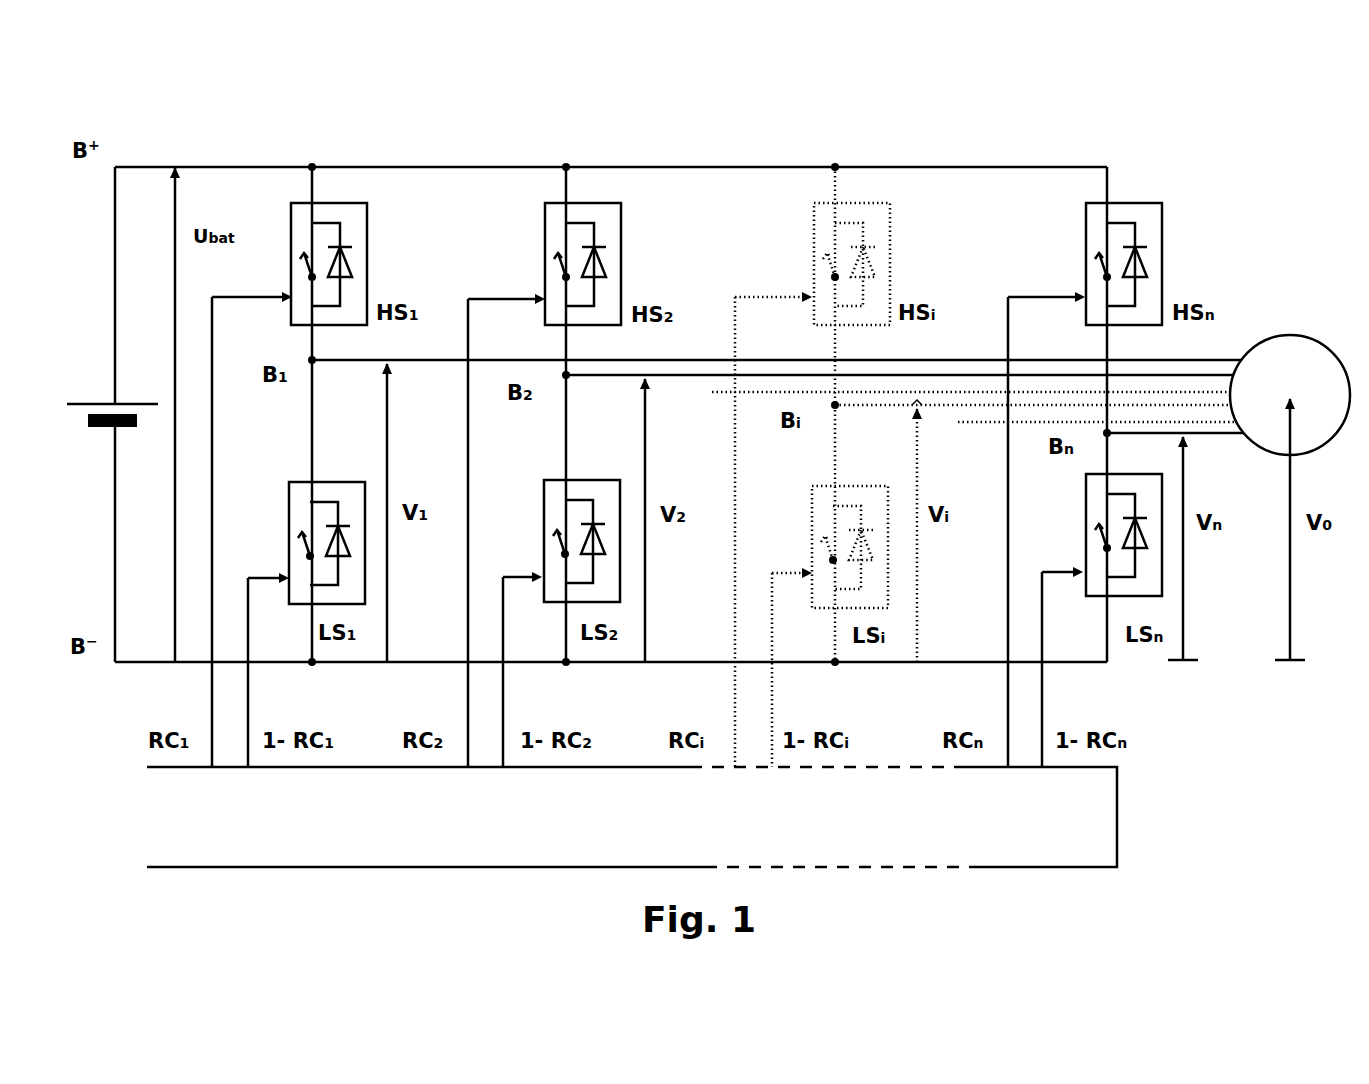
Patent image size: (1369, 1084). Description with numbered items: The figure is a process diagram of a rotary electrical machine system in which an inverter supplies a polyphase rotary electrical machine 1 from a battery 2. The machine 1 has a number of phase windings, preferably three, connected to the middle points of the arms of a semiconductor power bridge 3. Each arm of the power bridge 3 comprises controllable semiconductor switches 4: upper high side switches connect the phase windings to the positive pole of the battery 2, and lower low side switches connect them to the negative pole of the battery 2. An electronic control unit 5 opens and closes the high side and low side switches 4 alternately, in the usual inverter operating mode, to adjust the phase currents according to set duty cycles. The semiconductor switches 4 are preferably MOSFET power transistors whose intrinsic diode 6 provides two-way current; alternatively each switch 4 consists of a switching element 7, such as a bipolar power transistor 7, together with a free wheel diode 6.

The polyphase rotary electrical machine 1 is at (1292, 336).
The battery 2 is at (103, 398).
The semiconductor power bridge 3 is at (385, 146).
The semiconductor switch 4 is at (369, 240).
The electronic control unit 5 is at (1117, 840).
The free wheel diode 6 is at (350, 257).
The switching element 7 is at (306, 274).